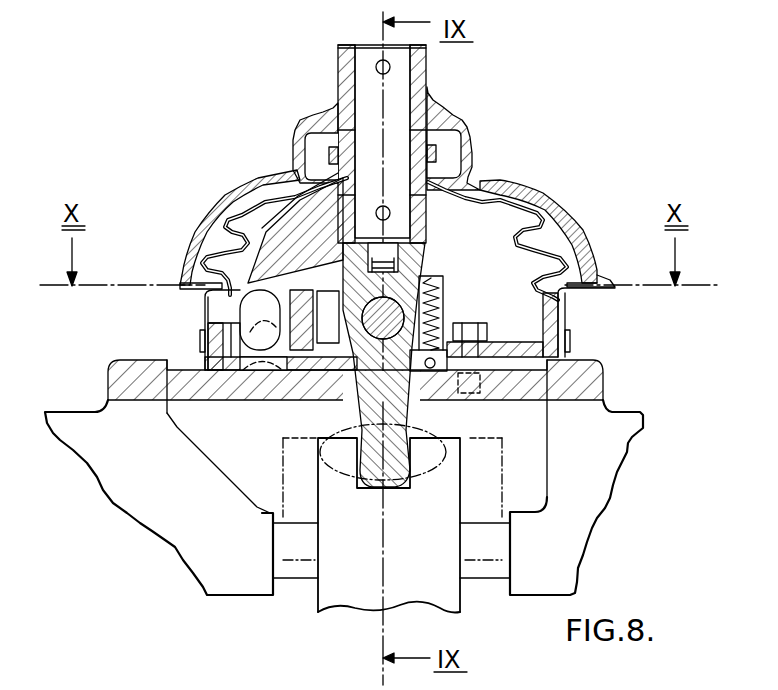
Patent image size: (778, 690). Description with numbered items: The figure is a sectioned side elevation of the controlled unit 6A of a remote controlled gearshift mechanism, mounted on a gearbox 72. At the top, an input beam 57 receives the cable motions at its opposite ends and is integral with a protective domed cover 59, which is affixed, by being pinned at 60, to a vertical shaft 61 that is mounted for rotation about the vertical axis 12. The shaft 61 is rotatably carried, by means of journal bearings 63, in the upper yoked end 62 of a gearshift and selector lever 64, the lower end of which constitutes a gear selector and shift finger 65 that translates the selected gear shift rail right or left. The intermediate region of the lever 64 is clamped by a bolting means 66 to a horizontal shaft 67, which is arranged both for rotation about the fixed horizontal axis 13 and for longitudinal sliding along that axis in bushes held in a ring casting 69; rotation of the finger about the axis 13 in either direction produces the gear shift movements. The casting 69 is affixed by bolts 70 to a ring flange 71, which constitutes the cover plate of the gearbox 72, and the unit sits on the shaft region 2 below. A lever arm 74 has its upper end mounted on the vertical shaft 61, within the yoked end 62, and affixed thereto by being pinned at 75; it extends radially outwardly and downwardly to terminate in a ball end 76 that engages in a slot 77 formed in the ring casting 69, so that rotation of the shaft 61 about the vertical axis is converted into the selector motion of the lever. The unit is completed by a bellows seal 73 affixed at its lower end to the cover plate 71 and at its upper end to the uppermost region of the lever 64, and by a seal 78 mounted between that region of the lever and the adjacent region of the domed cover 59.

The shaft 2 is at (388, 538).
The controlled unit 6A is at (189, 205).
The vertical axis 12 is at (405, 56).
The horizontal axis 13 is at (392, 310).
The input beam 57 is at (347, 182).
The protective domed cover 59 is at (580, 227).
The pin 60 is at (376, 66).
The vertical shaft 61 is at (392, 137).
The upper yoked end 62 is at (410, 165).
The journal bearings 63 is at (356, 157).
The gearshift and selector lever 64 is at (416, 253).
The gear selector and shift finger 65 is at (383, 457).
The bolting means 66 is at (443, 323).
The horizontal shaft 67 is at (293, 330).
The ring casting 69 is at (173, 383).
The bolts 70 is at (490, 328).
The ring flange 71 is at (515, 370).
The gearbox 72 is at (627, 420).
The bellows seal 73 is at (299, 233).
The lever arm 74 is at (227, 262).
The pin 75 is at (344, 182).
The ball end 76 is at (253, 310).
The slot 77 is at (203, 350).
The seal 78 is at (306, 132).